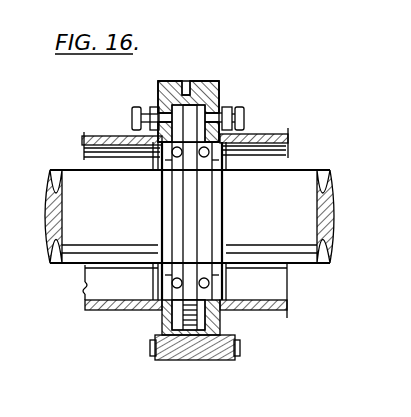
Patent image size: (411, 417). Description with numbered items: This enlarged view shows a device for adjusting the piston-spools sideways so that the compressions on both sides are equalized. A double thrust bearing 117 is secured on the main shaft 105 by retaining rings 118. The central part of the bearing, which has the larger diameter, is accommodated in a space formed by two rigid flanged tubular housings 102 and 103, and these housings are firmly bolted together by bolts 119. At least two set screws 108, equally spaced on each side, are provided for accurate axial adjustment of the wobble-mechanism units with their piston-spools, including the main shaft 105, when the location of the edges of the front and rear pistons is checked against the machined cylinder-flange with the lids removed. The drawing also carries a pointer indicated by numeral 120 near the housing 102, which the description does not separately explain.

The rigid flanged tubular housing 102 is at (268, 310).
The rigid flanged tubular housing 103 is at (100, 330).
The main shaft 105 is at (284, 180).
The set screw 108 is at (245, 106).
The double thrust bearing 117 is at (180, 352).
The retaining ring 118 is at (137, 330).
The bolt 119 is at (226, 352).
The pin 120 is at (232, 277).